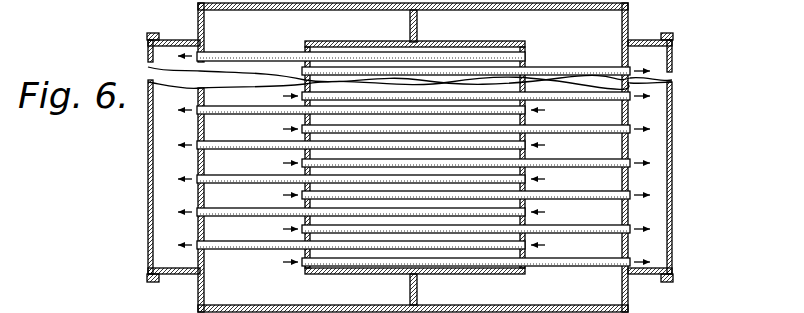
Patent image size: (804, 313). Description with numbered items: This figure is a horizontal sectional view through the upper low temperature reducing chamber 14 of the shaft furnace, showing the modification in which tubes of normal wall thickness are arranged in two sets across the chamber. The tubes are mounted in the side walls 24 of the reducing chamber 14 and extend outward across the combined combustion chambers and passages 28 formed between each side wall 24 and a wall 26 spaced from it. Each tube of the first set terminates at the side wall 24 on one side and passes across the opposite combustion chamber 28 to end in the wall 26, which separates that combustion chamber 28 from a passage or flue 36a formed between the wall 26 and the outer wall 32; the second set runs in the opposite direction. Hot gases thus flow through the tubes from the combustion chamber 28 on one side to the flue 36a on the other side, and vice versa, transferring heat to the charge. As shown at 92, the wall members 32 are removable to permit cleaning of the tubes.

The low temperature reducing chamber 14 is at (441, 157).
The side walls 24 is at (303, 166).
The walls 26 is at (198, 162).
The combustion chamber 28 is at (361, 150).
The wall member 32 is at (148, 143).
The flue 36a is at (688, 222).
The removable wall members 92 is at (673, 270).